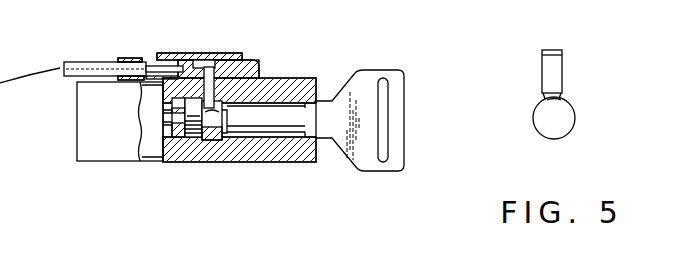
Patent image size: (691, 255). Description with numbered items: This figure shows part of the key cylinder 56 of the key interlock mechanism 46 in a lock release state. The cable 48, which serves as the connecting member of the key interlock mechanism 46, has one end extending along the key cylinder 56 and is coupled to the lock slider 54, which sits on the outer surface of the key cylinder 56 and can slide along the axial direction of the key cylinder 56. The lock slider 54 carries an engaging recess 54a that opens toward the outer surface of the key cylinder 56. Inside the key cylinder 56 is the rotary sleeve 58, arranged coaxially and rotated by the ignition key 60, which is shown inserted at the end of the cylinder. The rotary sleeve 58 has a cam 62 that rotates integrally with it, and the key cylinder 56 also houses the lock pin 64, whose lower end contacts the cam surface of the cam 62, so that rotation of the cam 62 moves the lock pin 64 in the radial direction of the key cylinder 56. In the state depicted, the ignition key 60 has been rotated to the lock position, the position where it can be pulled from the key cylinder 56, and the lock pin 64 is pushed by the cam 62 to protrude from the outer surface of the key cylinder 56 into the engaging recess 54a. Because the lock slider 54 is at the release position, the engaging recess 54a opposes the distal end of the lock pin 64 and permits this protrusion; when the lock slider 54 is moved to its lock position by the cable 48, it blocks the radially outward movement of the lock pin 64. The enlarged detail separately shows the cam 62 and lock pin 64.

The key interlock mechanism 46 is at (92, 166).
The cable 48 is at (88, 62).
The lock slider 54 is at (255, 61).
The engaging recess 54a is at (202, 62).
The key cylinder 56 is at (297, 78).
The rotary sleeve 58 is at (263, 128).
The ignition key 60 is at (363, 157).
The cam 62 is at (209, 139).
The lock pin 64 is at (210, 64).